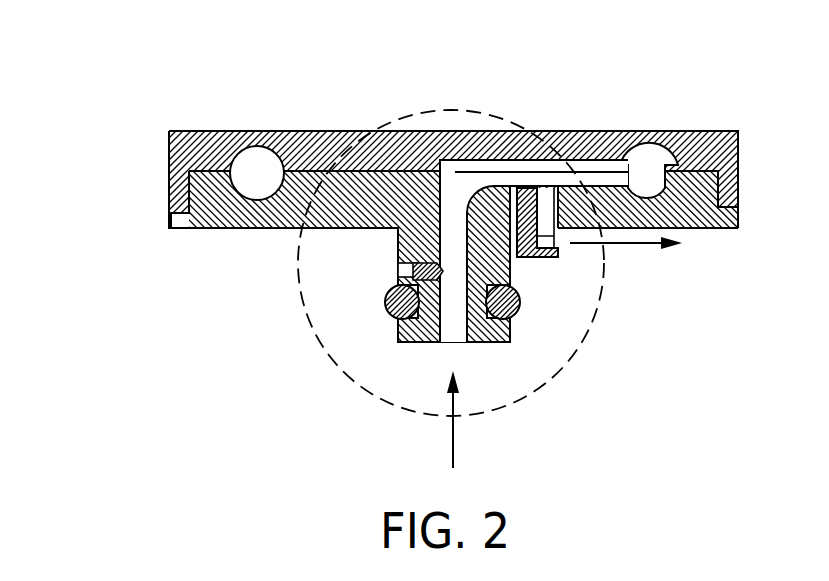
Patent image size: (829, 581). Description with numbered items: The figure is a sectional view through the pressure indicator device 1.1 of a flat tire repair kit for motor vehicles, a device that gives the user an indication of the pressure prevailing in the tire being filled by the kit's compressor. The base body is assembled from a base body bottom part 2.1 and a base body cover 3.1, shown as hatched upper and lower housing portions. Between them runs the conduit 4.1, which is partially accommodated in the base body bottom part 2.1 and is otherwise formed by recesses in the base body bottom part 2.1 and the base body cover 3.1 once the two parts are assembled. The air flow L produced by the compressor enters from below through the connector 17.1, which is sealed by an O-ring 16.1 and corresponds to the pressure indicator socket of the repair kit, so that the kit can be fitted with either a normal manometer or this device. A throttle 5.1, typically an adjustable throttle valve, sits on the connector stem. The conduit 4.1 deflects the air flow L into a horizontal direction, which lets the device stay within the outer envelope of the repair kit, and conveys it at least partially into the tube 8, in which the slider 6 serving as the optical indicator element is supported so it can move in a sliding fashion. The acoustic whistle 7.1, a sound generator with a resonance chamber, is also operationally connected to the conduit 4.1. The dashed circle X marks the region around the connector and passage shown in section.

The pressure indicator device 1.1 is at (234, 366).
The base body bottom part 2.1 is at (235, 212).
The base body cover 3.1 is at (185, 152).
The conduit 4.1 is at (455, 200).
The throttle 5.1 is at (398, 266).
The slider 6 is at (238, 128).
The acoustic whistle 7.1 is at (548, 237).
The tube 8 is at (648, 163).
The O-ring 16.1 is at (520, 312).
The connector 17.1 is at (393, 350).
The detail region X is at (451, 263).
The air flow L is at (630, 243).